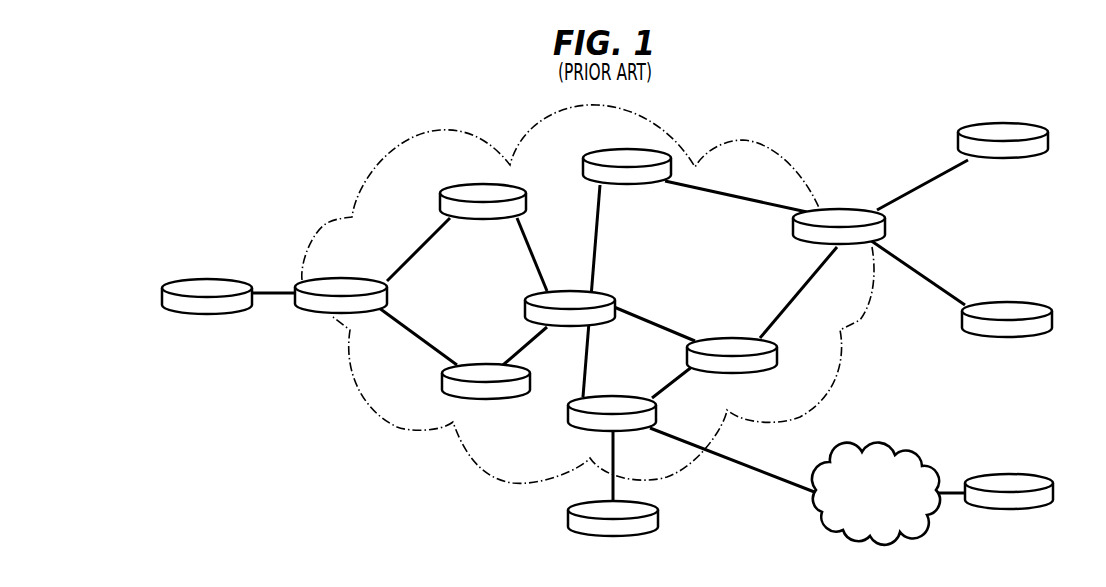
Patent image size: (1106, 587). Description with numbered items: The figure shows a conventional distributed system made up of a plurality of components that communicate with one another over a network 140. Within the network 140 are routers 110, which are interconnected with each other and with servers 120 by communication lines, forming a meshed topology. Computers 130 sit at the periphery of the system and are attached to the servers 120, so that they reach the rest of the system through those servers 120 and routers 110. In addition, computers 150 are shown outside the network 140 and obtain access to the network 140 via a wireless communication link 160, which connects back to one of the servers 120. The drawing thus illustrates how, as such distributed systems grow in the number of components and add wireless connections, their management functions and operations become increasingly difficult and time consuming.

The routers 110 is at (462, 183).
The servers 120 is at (310, 312).
The computers 130 is at (178, 313).
The network 140 is at (672, 125).
The computers (wireless) 150 is at (1048, 478).
The wireless communication link 160 is at (848, 533).